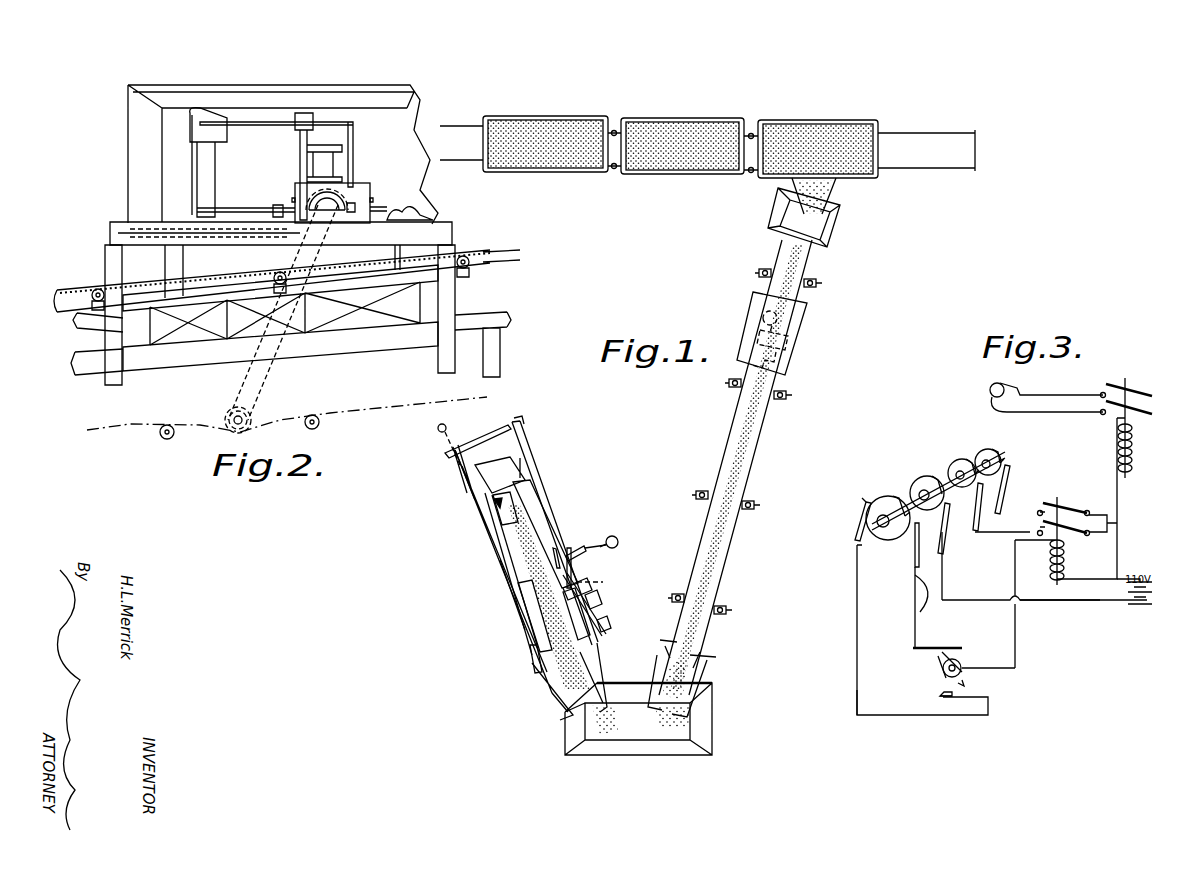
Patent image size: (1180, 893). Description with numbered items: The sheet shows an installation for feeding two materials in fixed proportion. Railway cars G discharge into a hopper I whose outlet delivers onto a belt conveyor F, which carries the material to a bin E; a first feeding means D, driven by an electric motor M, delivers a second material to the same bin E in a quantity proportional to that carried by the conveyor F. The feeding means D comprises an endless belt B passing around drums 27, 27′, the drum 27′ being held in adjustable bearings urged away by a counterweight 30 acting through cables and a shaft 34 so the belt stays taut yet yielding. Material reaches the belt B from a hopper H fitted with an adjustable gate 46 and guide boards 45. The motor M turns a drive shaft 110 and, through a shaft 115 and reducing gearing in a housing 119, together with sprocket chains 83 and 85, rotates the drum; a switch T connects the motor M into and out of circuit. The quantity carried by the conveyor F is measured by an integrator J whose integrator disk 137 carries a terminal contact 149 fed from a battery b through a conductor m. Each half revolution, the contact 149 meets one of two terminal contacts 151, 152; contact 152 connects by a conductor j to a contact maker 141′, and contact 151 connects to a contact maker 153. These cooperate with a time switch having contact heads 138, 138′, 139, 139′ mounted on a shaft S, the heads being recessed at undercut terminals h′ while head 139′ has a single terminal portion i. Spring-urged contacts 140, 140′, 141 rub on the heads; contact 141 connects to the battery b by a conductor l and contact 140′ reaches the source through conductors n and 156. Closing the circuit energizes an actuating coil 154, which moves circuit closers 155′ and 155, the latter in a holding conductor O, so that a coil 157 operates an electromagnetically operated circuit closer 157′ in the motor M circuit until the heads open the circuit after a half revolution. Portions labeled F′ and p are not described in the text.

In FIG. 2, the integrator disk 137 is at (347, 197).
In FIG. 3, the integrator disk 137 is at (928, 687).
In FIG. 2, the integrator J is at (315, 190).
In FIG. 1, the integrator J is at (797, 354).
In FIG. 2, the second traveling conveyor F is at (335, 407).
In FIG. 1, the second traveling conveyor F is at (722, 560).
In FIG. 2, the conveyor rail F′ is at (287, 281).
In FIG. 1, the railway cars G is at (603, 175).
In FIG. 1, the hopper I is at (832, 232).
In FIG. 1, the bin E is at (712, 732).
In FIG. 1, the drum 27 is at (538, 660).
In FIG. 1, the drum 27′ is at (515, 463).
In FIG. 1, the shaft 34 is at (478, 431).
In FIG. 1, the counterweight 30 is at (433, 444).
In FIG. 1, the hopper H is at (498, 515).
In FIG. 1, the adjustable gate 46 is at (500, 526).
In FIG. 1, the guide boards 45 is at (503, 538).
In FIG. 1, the feeding means D is at (500, 563).
In FIG. 1, the endless belt B is at (522, 585).
In FIG. 1, the sprocket chain 85 is at (560, 572).
In FIG. 1, the switch T is at (553, 565).
In FIG. 1, the drive shaft 110 is at (573, 547).
In FIG. 1, the electric motor M is at (611, 557).
In FIG. 3, the electric motor M is at (1041, 385).
In FIG. 1, the sprocket chain 83 is at (593, 604).
In FIG. 1, the housing 119 is at (602, 600).
In FIG. 1, the shaft 115 is at (608, 619).
In FIG. 3, the contact head 139′ is at (880, 504).
In FIG. 3, the contact head 139 is at (920, 480).
In FIG. 3, the contact head 138′ is at (952, 462).
In FIG. 3, the contact head 138 is at (986, 448).
In FIG. 3, the undercut contact terminals h′ is at (1002, 458).
In FIG. 3, the shaft S is at (866, 537).
In FIG. 3, the contact maker 153 is at (858, 541).
In FIG. 3, the contact terminal portion i is at (905, 547).
In FIG. 3, the contact terminal 141 is at (957, 528).
In FIG. 3, the contact terminal 140′ is at (967, 507).
In FIG. 3, the contact terminal 140 is at (1010, 482).
In FIG. 3, the electromagnetically operated circuit closer 157′ is at (1136, 372).
In FIG. 3, the coil 157 is at (1112, 446).
In FIG. 3, the circuit closer 155 is at (1060, 497).
In FIG. 3, the circuit closer 155′ is at (1045, 500).
In FIG. 3, the conductor O is at (1036, 508).
In FIG. 3, the conductor 156 is at (1105, 518).
In FIG. 3, the actuating coil 154 is at (1067, 560).
In FIG. 3, the conductor n is at (952, 566).
In FIG. 3, the battery b is at (1130, 606).
In FIG. 3, the conductor l is at (1066, 608).
In FIG. 3, the conductor m is at (1012, 643).
In FIG. 3, the conductor j is at (912, 623).
In FIG. 3, the wire p is at (858, 700).
In FIG. 3, the terminal contact 151 is at (965, 700).
In FIG. 3, the terminal contact 152 is at (950, 636).
In FIG. 3, the terminal contact 149 is at (942, 658).
In FIG. 3, the contact maker 141′ is at (915, 594).